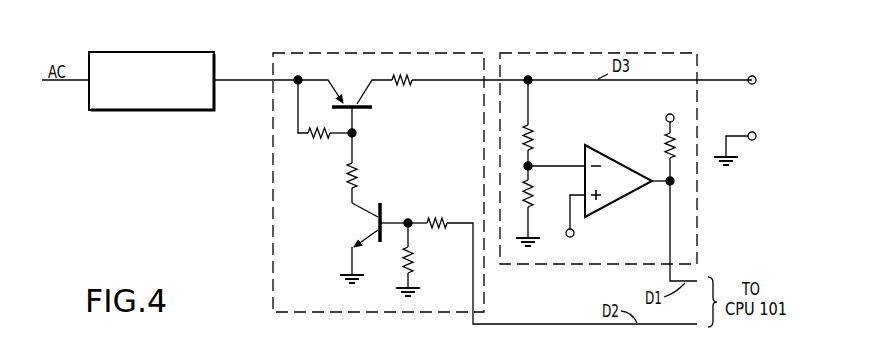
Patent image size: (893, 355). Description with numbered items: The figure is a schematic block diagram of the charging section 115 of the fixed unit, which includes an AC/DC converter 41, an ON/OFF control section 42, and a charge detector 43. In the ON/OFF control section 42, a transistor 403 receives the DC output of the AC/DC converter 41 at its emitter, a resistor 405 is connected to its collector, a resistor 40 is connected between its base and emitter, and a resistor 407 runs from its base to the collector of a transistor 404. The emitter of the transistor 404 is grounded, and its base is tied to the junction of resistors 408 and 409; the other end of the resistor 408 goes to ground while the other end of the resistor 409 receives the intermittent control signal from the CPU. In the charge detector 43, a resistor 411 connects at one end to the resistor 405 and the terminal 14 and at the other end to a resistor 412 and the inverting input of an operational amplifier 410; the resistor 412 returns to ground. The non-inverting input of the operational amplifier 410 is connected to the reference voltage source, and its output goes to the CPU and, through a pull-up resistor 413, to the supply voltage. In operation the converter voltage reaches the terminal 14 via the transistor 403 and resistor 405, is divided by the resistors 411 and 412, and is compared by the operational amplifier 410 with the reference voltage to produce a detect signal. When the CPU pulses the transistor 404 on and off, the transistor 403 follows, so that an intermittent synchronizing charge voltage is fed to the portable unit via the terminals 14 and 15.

The terminal 14 is at (756, 84).
The terminal 15 is at (756, 140).
The resistor 40 is at (327, 142).
The AC/DC converter 41 is at (126, 51).
The ON/OFF control section 42 is at (476, 49).
The charge detector 43 is at (673, 50).
The charging section 115 is at (248, 143).
The transistor 403 is at (348, 100).
The transistor 404 is at (360, 221).
The resistor 405 is at (405, 87).
The resistor 407 is at (361, 178).
The resistor 408 is at (416, 258).
The resistor 409 is at (451, 205).
The operational amplifier 410 is at (601, 151).
The resistor 411 is at (531, 138).
The resistor 412 is at (532, 198).
The pull-up resistor 413 is at (661, 143).